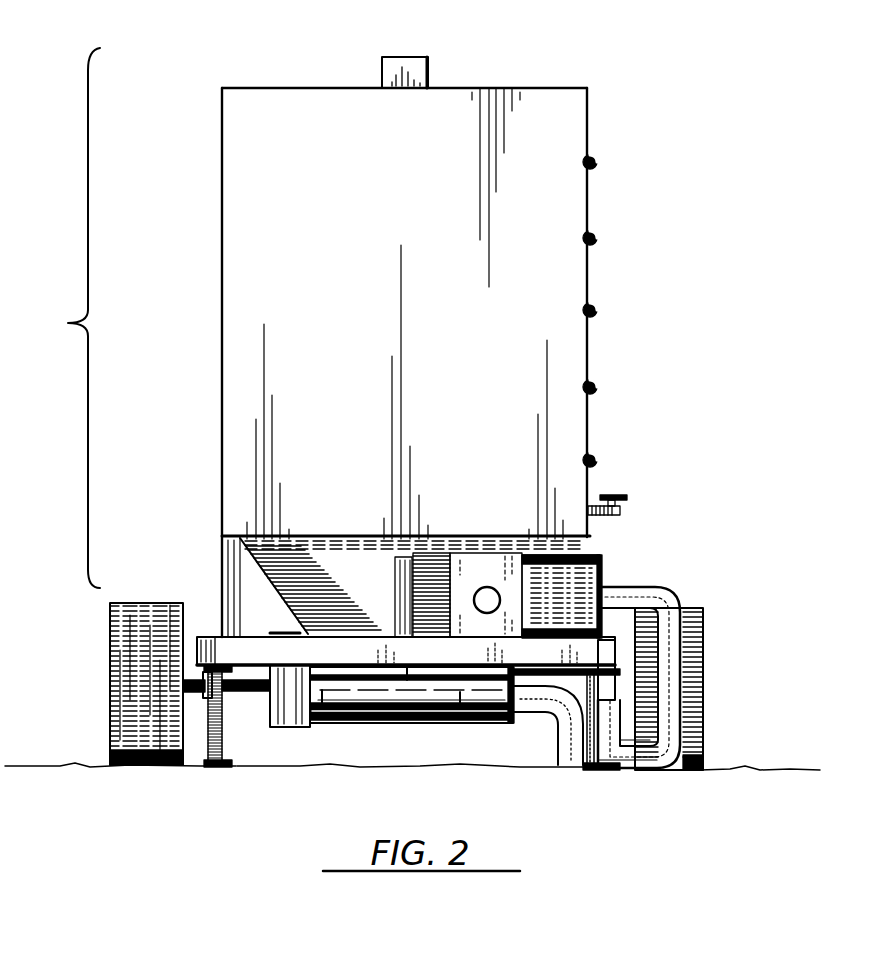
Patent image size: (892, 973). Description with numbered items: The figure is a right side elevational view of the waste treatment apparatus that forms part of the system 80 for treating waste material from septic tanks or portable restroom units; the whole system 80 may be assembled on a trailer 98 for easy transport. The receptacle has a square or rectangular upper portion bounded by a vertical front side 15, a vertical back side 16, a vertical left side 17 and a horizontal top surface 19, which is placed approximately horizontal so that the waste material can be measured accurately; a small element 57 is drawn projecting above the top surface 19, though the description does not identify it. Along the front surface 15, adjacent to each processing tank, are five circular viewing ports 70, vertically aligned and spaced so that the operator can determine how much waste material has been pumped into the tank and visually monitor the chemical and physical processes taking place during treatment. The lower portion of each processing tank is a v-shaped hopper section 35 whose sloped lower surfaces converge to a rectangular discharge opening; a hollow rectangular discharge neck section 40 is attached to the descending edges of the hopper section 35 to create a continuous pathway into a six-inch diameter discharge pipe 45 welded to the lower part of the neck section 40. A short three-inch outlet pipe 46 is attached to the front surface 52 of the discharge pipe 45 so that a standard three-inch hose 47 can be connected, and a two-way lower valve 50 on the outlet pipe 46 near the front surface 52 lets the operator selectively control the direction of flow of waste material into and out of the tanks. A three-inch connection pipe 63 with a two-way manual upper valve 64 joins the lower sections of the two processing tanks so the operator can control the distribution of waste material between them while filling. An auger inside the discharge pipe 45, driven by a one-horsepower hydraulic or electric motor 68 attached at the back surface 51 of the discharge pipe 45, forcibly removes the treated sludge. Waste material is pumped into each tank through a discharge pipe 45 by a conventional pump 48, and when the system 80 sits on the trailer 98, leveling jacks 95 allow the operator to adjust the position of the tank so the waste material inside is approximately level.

The vertical front side 15 is at (590, 127).
The vertical back side 16 is at (222, 438).
The vertical left side 17 is at (444, 487).
The horizontal top surface 19 is at (491, 88).
The hopper section 35 is at (277, 550).
The discharge neck section 40 is at (418, 741).
The discharge pipe 45 is at (465, 723).
The outlet pipe 46 is at (537, 702).
The hose 47 is at (653, 750).
The pump 48 is at (575, 587).
The lower valve 50 is at (608, 668).
The back surface 51 is at (325, 723).
The front surface 52 is at (520, 723).
The vent cap 57 is at (390, 57).
The connection pipe 63 is at (620, 511).
The upper valve 64 is at (623, 495).
The motor 68 is at (290, 728).
The viewing ports 70 is at (596, 236).
The system 80 is at (61, 318).
The leveling jacks 95 is at (210, 740).
The trailer 98 is at (217, 642).